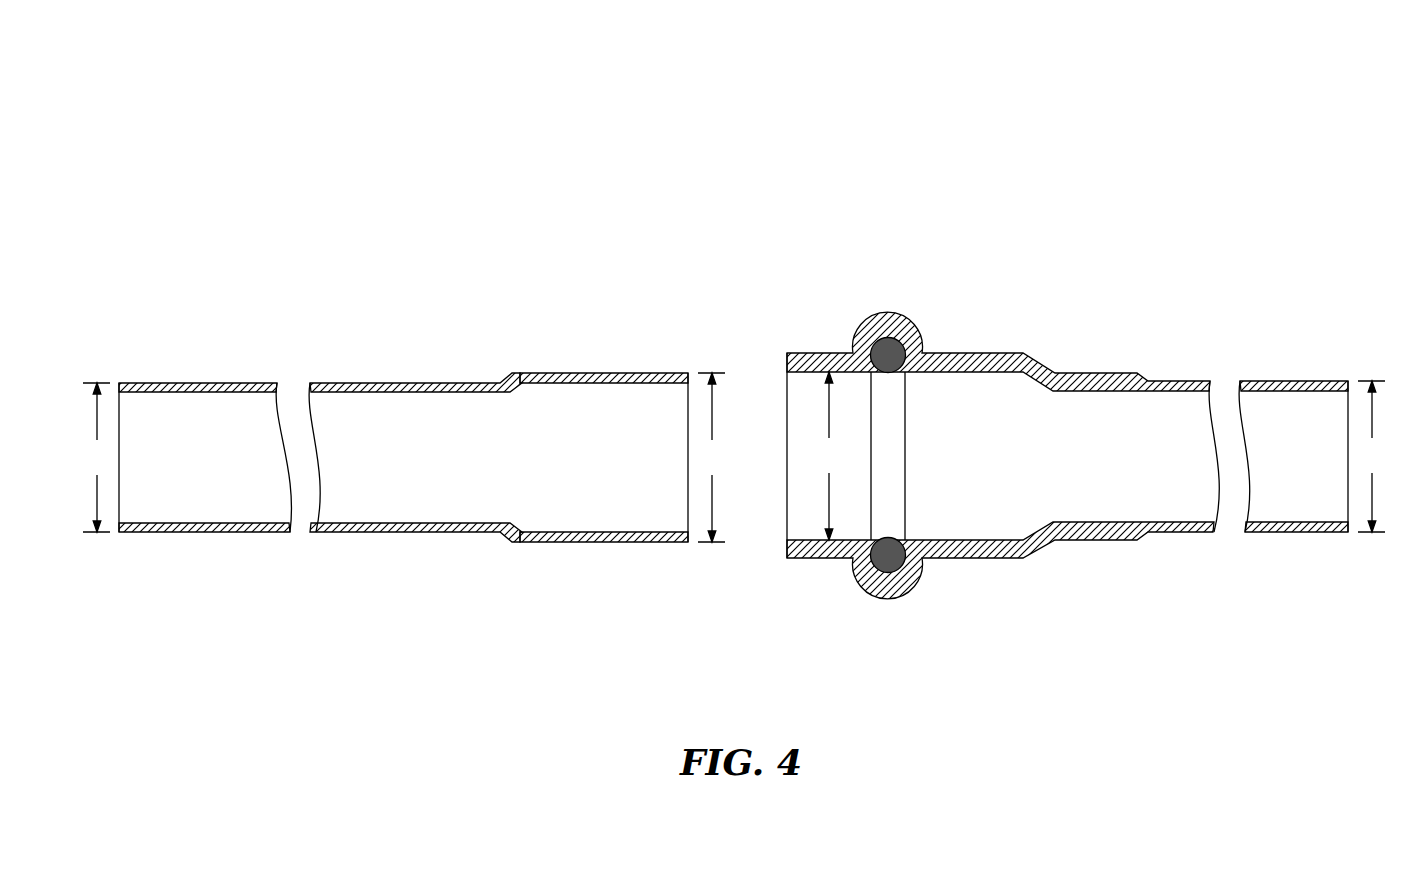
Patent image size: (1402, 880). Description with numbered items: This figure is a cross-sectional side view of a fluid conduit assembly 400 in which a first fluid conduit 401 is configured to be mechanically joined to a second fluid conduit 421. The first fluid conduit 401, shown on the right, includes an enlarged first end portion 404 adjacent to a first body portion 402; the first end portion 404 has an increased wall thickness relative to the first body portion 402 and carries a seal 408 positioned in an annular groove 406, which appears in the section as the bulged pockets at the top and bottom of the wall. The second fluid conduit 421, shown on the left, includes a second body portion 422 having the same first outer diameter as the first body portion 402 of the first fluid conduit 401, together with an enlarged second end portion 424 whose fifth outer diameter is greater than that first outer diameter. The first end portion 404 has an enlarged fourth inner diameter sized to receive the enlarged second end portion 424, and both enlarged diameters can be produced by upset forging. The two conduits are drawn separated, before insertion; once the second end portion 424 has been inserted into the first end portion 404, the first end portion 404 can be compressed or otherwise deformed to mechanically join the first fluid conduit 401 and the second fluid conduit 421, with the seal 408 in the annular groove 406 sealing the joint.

The fluid conduit assembly 400 is at (1162, 130).
The second fluid conduit 421 is at (355, 308).
The second body portion 422 is at (333, 569).
The second end portion 424 is at (586, 569).
The first fluid conduit 401 is at (1138, 302).
The first body portion 402 is at (1190, 575).
The first end portion 404 is at (856, 619).
The annular groove 406 is at (902, 562).
The seal 408 is at (891, 352).